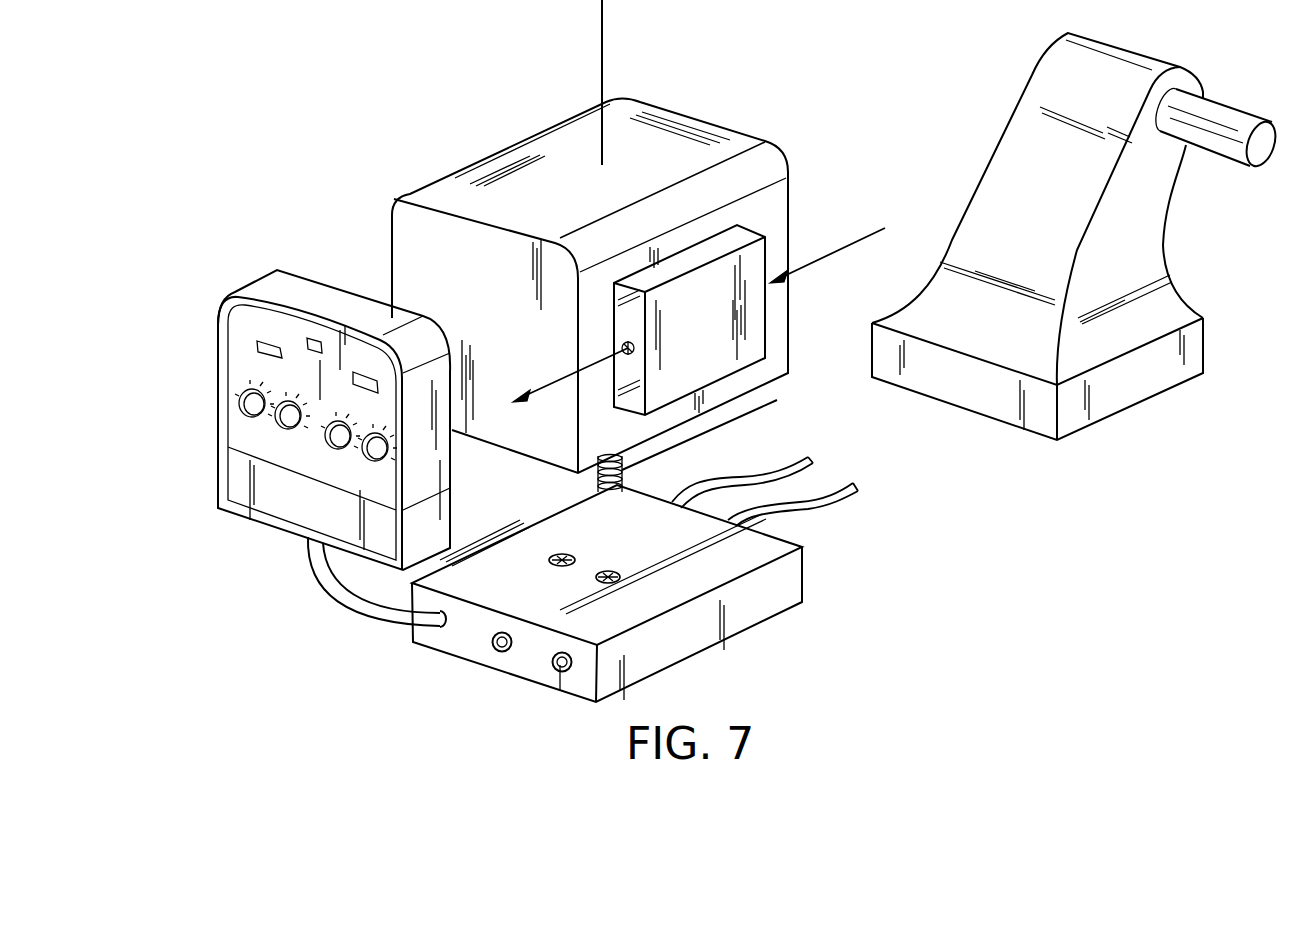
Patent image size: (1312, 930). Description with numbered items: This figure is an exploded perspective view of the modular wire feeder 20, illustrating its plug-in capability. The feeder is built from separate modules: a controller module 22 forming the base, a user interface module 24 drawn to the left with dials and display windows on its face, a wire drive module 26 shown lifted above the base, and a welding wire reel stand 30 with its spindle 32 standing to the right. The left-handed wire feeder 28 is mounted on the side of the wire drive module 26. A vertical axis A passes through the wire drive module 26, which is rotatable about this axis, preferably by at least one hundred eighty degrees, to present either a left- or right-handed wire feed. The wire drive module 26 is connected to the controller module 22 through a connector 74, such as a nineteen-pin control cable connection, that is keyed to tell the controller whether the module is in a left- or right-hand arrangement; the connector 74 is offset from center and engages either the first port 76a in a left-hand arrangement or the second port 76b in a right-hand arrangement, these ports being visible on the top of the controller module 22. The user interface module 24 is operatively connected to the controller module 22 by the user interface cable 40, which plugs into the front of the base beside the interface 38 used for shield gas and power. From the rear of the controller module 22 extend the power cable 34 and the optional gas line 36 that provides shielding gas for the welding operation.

The modular wire feeder 20 is at (247, 168).
The controller module 22 is at (773, 605).
The user interface module 24 is at (277, 270).
The wire drive module 26 is at (688, 122).
The left-handed wire feeder 28 is at (748, 333).
The welding wire reel stand 30 is at (1006, 152).
The spindle 32 is at (1232, 118).
The power cable 34 is at (845, 497).
The gas line 36 is at (793, 462).
The interface 38 is at (497, 652).
The user interface cable 40 is at (333, 585).
The connector 74 is at (714, 427).
The first port 76a is at (557, 553).
The second port 76b is at (620, 577).
The axis A is at (602, 37).